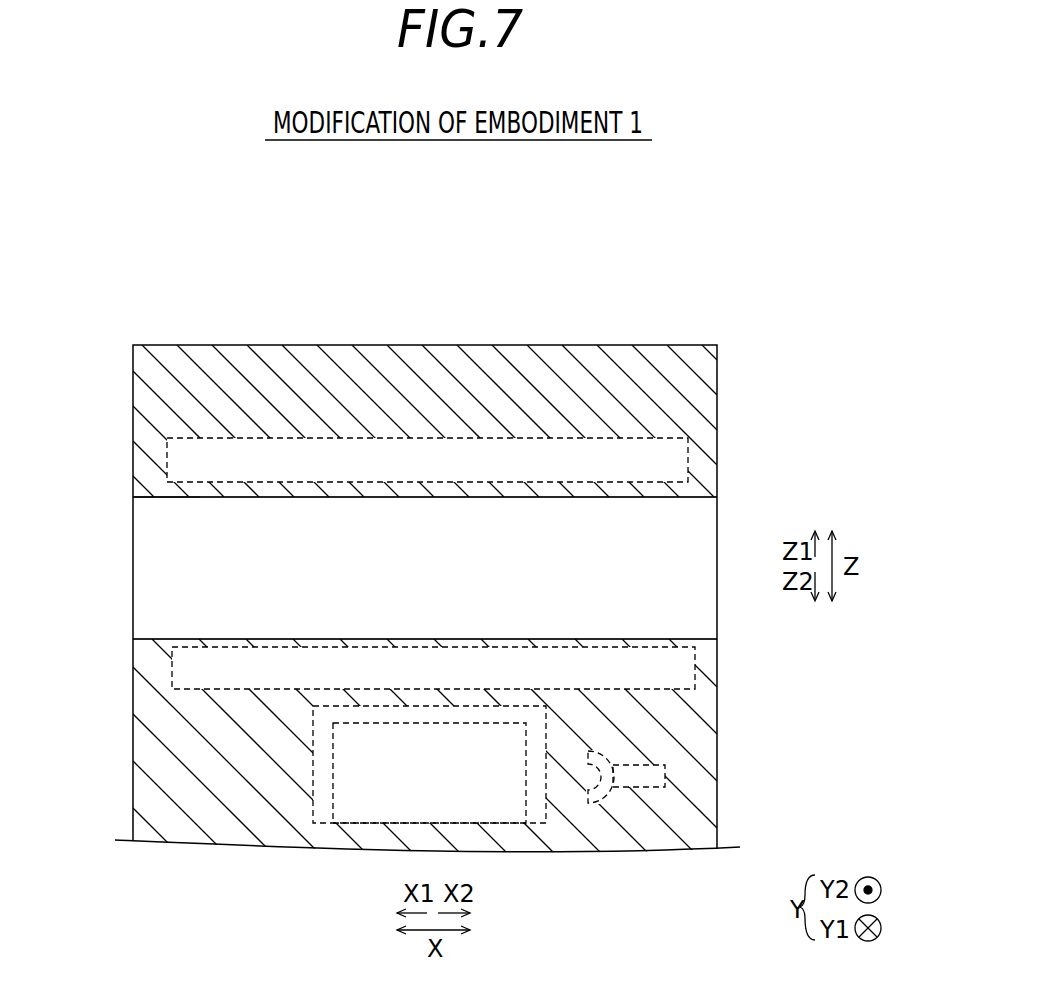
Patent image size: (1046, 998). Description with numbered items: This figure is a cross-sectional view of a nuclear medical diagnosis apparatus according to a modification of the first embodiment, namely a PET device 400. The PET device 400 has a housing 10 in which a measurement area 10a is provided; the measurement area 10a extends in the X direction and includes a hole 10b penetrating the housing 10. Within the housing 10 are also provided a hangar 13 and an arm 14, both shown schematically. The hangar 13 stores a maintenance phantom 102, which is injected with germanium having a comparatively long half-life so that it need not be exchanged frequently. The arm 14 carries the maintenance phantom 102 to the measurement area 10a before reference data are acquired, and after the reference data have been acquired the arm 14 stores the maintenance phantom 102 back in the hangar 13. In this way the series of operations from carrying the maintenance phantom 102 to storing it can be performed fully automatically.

The PET device 400 is at (429, 616).
The housing 10 is at (692, 402).
The measurement area 10a is at (293, 562).
The hole 10b is at (133, 500).
The hangar 13 is at (312, 800).
The maintenance phantom 102 is at (383, 802).
The arm 14 is at (640, 787).